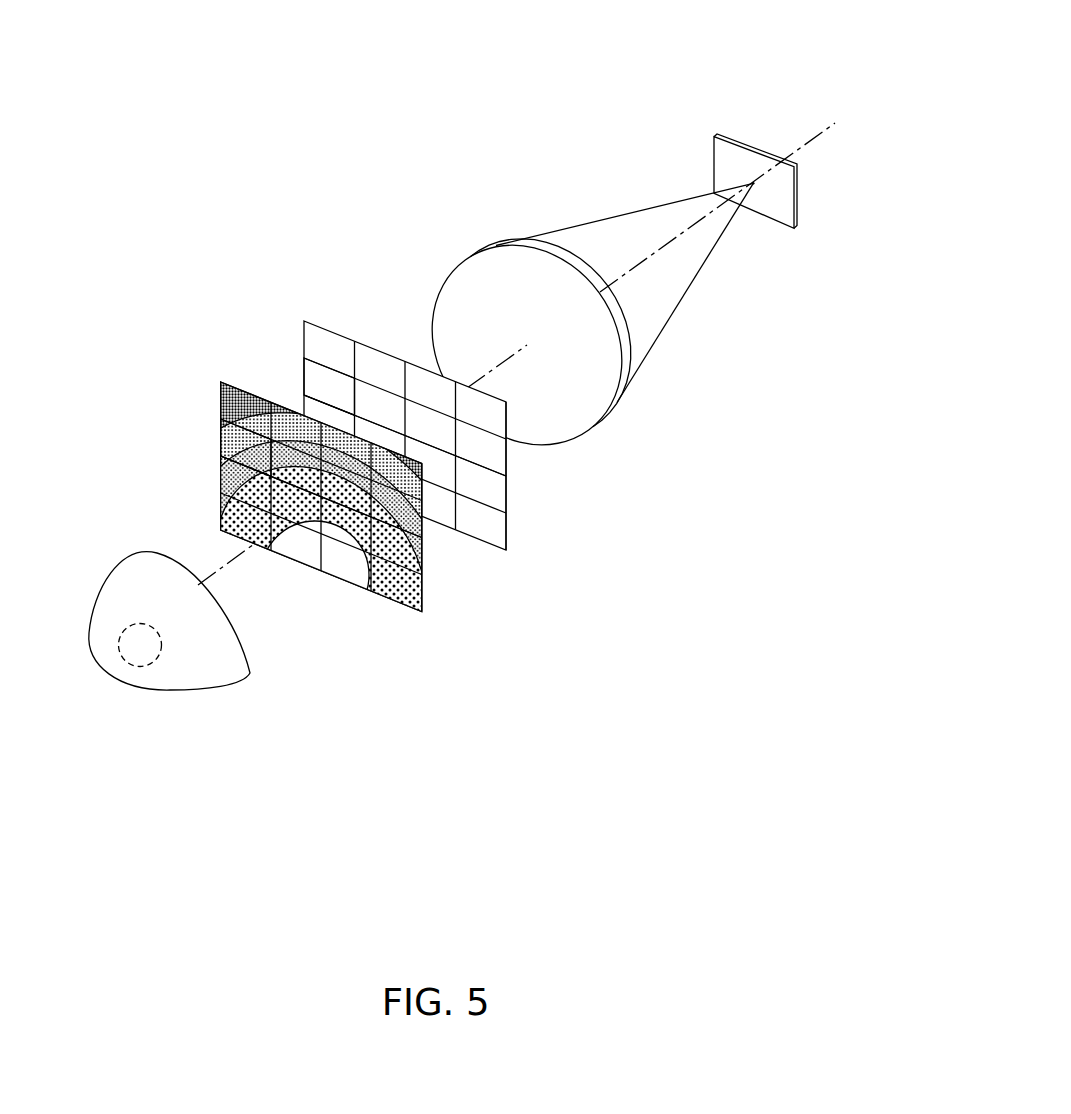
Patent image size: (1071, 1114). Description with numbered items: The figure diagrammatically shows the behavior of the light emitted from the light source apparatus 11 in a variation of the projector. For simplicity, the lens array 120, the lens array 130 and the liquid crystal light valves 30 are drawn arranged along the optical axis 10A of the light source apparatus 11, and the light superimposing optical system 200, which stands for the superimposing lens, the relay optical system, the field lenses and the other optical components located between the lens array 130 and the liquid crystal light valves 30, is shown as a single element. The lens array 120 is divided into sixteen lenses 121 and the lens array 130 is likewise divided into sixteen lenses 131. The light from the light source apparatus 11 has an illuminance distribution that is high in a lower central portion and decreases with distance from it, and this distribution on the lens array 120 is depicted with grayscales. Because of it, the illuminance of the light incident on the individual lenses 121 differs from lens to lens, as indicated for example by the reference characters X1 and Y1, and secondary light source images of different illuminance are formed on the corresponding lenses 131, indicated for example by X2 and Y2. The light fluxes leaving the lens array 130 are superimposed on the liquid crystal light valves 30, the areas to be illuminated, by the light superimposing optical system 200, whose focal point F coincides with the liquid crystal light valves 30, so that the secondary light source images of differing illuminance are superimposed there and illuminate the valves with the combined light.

The optical axis 10A is at (835, 124).
The light source apparatus 11 is at (130, 561).
The liquid crystal light valves 30 is at (716, 136).
The lens array 120 is at (212, 377).
The lenses 121 is at (222, 447).
The lens array 130 is at (296, 317).
The lenses 131 is at (318, 382).
The light superimposing optical system 200 is at (470, 254).
The focal point F is at (753, 183).
The reference character X1 is at (343, 497).
The reference character Y1 is at (422, 497).
The reference character X2 is at (442, 435).
The reference character Y2 is at (498, 418).